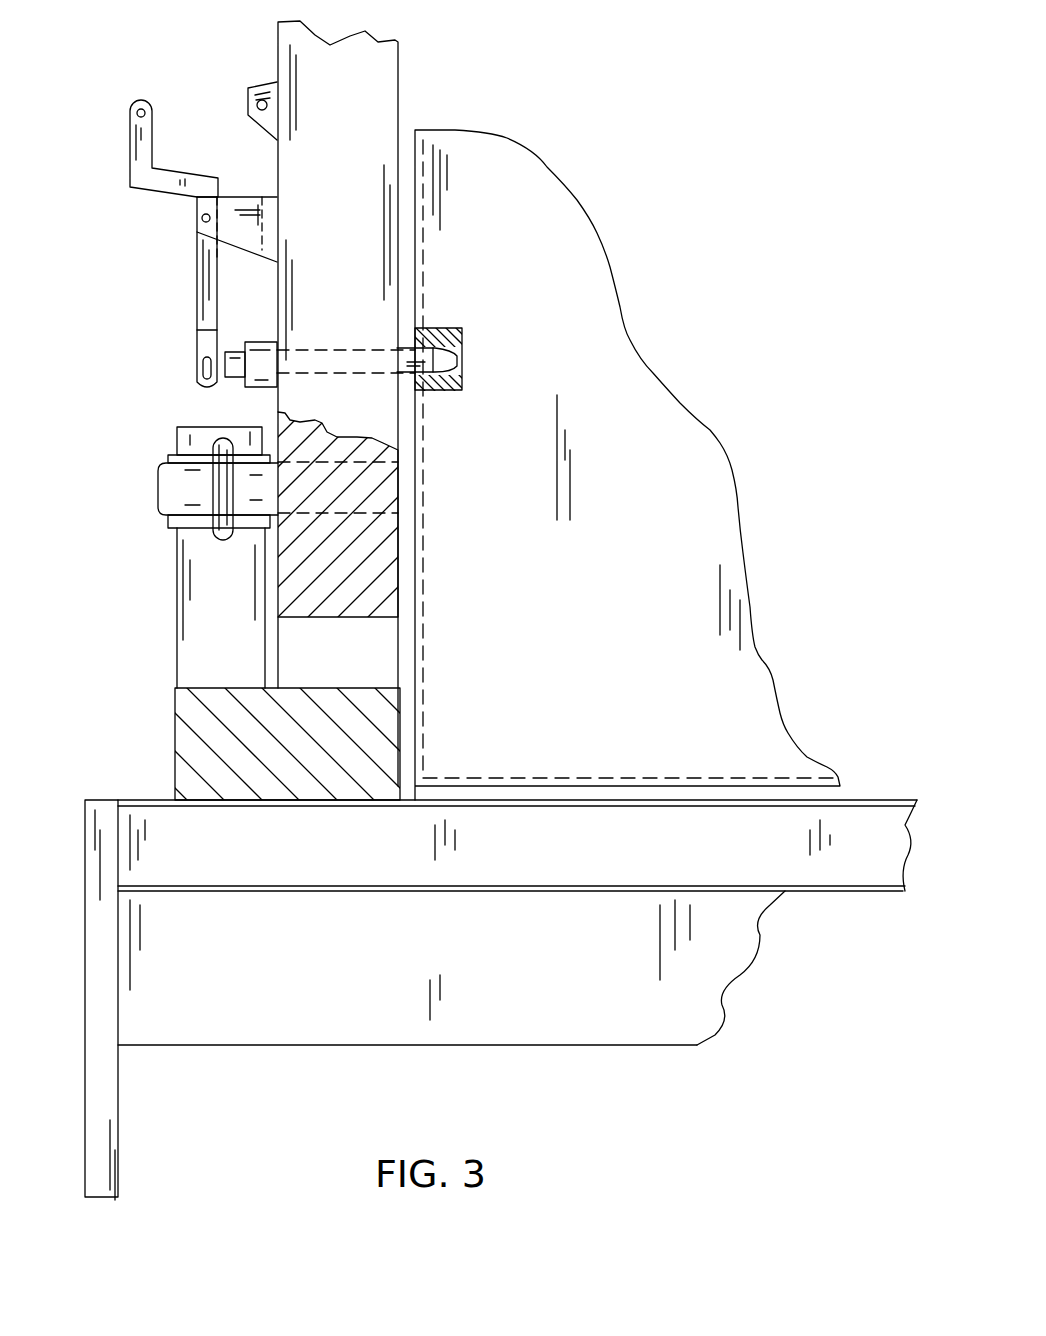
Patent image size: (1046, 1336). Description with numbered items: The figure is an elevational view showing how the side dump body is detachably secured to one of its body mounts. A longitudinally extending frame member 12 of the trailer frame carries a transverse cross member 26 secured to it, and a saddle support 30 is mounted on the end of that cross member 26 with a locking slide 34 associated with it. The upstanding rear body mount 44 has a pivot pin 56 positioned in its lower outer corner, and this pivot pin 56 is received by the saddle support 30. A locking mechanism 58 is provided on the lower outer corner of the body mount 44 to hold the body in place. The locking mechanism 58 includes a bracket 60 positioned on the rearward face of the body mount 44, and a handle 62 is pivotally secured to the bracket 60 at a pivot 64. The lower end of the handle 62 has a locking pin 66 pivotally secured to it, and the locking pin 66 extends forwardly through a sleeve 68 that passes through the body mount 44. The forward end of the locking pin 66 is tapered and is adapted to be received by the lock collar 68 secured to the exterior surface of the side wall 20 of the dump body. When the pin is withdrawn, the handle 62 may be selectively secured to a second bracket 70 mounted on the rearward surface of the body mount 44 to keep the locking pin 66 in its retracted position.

The frame member 12 is at (152, 800).
The side wall 20 is at (640, 560).
The cross member 26 is at (232, 687).
The saddle support 30 is at (222, 548).
The locking slide 34 is at (222, 482).
The rear body mount 44 is at (409, 110).
The pivot pin 56 is at (178, 491).
The locking mechanism 58 is at (186, 283).
The bracket 60 is at (245, 195).
The handle 62 is at (137, 173).
The pivot 64 is at (200, 217).
The locking pin 66 is at (237, 377).
The sleeve / lock collar 68 is at (500, 280).
The bracket 70 is at (253, 90).